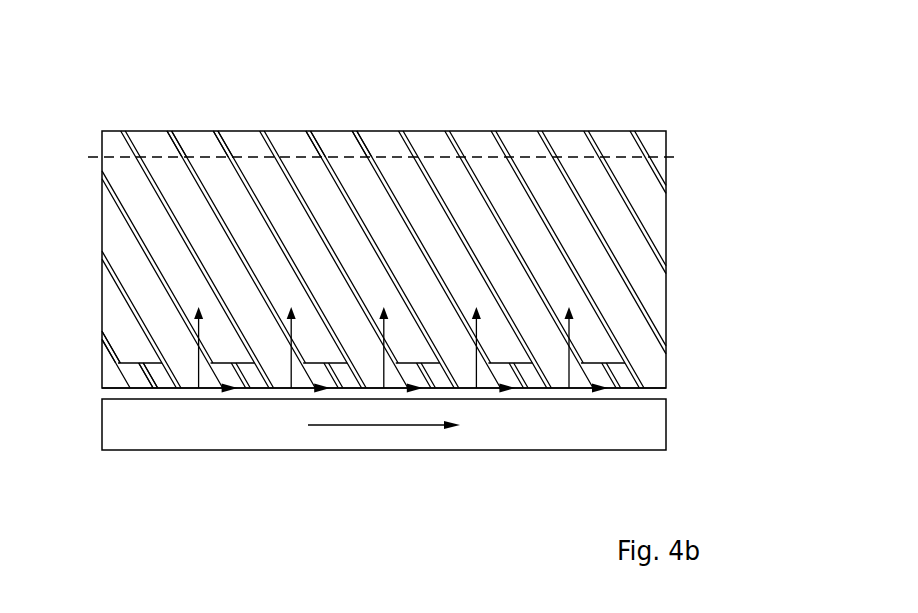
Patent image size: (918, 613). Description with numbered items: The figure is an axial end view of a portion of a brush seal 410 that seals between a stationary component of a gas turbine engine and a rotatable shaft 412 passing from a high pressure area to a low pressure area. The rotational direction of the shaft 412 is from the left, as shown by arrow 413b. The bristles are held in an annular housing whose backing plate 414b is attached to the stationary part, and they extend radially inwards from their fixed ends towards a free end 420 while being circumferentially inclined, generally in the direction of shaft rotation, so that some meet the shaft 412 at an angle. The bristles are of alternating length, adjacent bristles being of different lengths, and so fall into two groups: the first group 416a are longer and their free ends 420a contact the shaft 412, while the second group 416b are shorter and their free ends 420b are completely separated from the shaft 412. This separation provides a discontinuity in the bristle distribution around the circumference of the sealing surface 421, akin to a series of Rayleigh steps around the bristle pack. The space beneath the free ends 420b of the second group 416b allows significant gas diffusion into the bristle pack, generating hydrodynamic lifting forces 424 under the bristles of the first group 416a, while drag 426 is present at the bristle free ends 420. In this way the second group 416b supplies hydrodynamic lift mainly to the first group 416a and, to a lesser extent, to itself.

The brush seal 410 is at (614, 67).
The shaft 412 is at (523, 437).
The arrow 413b is at (373, 427).
The backing plate 414b is at (160, 155).
The first group of bristles 416a is at (528, 148).
The second group of bristles 416b is at (388, 152).
The free end 420 is at (622, 319).
The free ends of first group of bristles 420a is at (115, 380).
The free ends of second group of bristles 420b is at (152, 362).
The sealing surface 421 is at (623, 391).
The hydrodynamic lifting forces 424 is at (188, 357).
The drag 426 is at (427, 389).